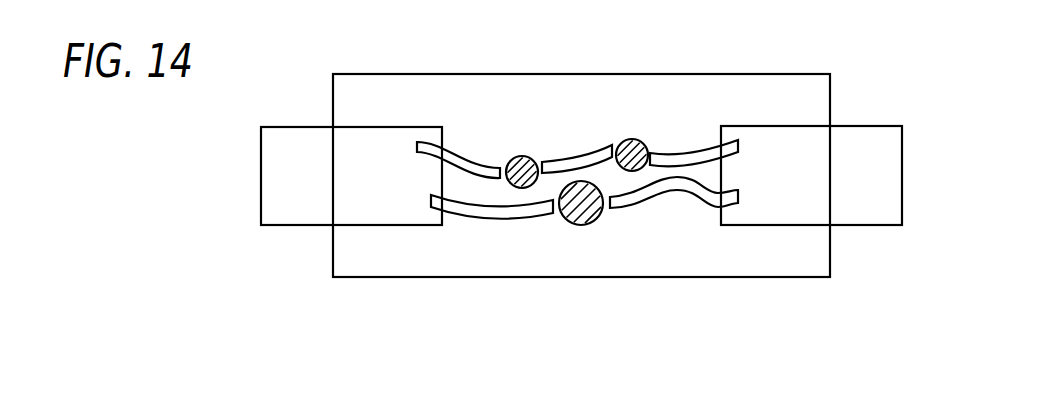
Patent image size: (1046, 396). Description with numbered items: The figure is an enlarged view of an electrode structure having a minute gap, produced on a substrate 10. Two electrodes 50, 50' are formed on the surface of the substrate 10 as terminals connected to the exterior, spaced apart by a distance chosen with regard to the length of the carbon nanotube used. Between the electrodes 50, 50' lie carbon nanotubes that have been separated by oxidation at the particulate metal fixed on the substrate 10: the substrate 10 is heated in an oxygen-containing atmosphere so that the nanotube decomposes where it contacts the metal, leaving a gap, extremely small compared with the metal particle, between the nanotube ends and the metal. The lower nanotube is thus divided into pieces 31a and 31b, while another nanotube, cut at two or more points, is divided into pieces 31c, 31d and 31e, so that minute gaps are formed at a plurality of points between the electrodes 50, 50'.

The substrate 10 is at (773, 74).
The electrode 50 is at (351, 155).
The electrode 50' is at (811, 155).
The carbon nanotube 31a is at (497, 220).
The carbon nanotube 31b is at (617, 210).
The carbon nanotube piece 31c is at (456, 150).
The carbon nanotube piece 31d is at (548, 161).
The carbon nanotube piece 31e is at (653, 153).